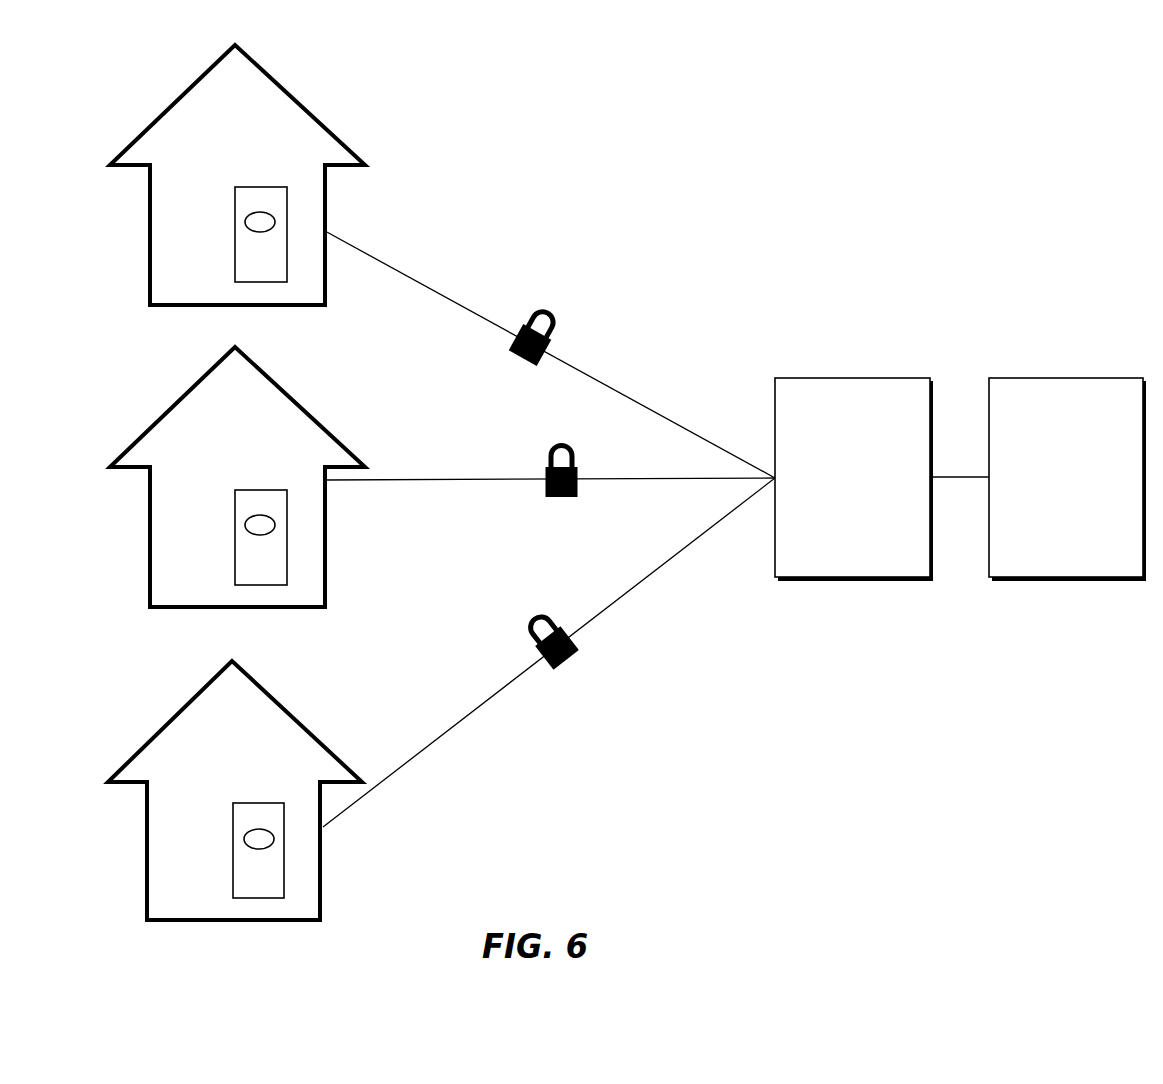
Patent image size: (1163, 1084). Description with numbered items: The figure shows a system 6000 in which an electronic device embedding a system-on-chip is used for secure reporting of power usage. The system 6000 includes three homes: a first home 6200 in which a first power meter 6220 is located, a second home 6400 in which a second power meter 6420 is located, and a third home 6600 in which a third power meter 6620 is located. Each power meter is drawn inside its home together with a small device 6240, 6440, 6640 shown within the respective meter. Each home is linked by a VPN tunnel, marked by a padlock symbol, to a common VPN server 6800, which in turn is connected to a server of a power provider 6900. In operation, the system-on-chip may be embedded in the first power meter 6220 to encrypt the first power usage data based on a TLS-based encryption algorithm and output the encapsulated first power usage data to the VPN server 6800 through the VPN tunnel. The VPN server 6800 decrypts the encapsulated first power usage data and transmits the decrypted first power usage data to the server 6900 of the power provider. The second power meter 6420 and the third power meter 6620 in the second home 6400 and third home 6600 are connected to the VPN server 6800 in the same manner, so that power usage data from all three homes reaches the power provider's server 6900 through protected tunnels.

The system 6000 is at (723, 277).
The first home 6200 is at (158, 122).
The first power meter 6220 is at (235, 236).
The communication device of first house 6240 is at (260, 212).
The second home 6400 is at (158, 424).
The second power meter 6420 is at (235, 538).
The communication device of second house 6440 is at (260, 514).
The third home 6600 is at (155, 738).
The third power meter 6620 is at (233, 851).
The communication device of third house 6640 is at (259, 829).
The VPN server 6800 is at (854, 479).
The server of a power provider 6900 is at (1067, 479).